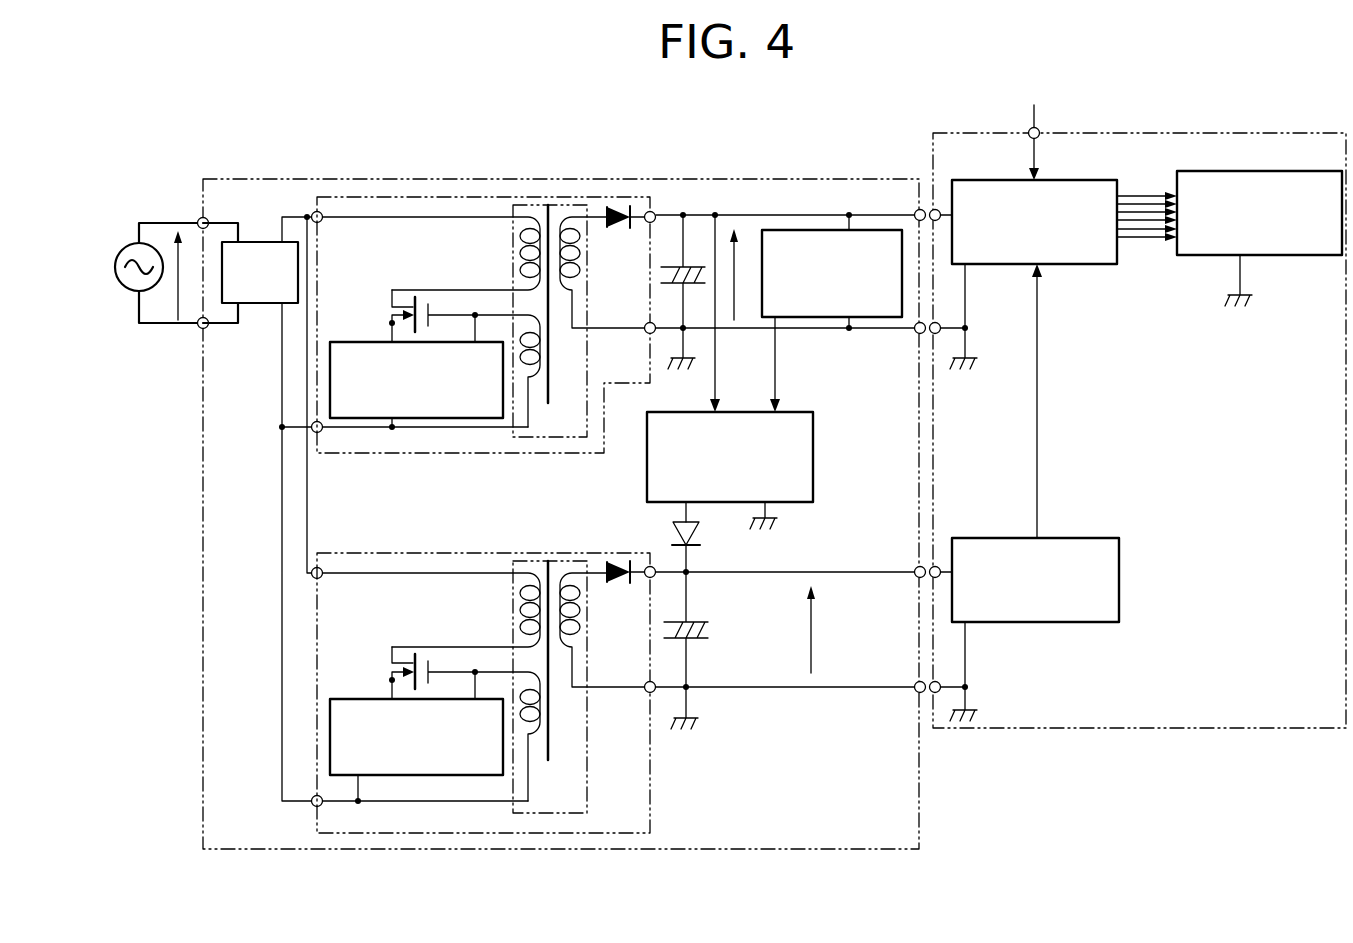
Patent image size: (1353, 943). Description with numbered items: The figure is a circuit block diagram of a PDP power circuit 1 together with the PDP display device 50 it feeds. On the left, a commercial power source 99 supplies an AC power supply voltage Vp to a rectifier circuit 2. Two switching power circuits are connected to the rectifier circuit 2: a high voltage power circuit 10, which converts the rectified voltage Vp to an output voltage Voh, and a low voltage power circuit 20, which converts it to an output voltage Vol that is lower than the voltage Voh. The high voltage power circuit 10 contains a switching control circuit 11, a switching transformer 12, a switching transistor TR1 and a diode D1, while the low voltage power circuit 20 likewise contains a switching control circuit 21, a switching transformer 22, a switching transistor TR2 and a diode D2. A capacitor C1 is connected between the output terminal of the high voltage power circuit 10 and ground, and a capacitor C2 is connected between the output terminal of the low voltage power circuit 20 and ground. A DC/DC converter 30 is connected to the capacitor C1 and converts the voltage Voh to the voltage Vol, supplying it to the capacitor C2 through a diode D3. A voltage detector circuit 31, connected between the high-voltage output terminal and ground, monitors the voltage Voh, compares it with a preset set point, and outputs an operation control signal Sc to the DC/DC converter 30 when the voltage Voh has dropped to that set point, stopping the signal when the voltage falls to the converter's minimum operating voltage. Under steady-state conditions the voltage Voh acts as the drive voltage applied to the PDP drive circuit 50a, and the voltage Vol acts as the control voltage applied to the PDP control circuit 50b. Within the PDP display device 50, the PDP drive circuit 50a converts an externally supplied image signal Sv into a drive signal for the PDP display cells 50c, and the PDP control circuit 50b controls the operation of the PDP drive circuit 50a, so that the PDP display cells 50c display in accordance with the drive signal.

The PDP power circuit 1 is at (919, 822).
The rectifier circuit 2 is at (259, 242).
The high voltage power circuit 10 is at (355, 195).
The switching control circuit 11 is at (367, 418).
The switching transformer 12 is at (520, 203).
The low voltage power circuit 20 is at (317, 822).
The switching control circuit 21 is at (330, 740).
The switching transformer 22 is at (588, 797).
The DC/DC converter 30 is at (815, 423).
The voltage detector circuit 31 is at (883, 232).
The PDP display device 50 is at (1102, 730).
The PDP drive circuit 50a is at (1073, 265).
The PDP control circuit 50b is at (1090, 537).
The PDP display cells 50c is at (1295, 257).
The commercial power source 99 is at (117, 290).
The switching transistor TR1 is at (392, 312).
The switching transistor TR2 is at (392, 668).
The diode D1 is at (620, 205).
The diode D2 is at (618, 585).
The diode D3 is at (672, 533).
The capacitor C1 is at (688, 268).
The capacitor C2 is at (695, 620).
The output voltage of the high voltage power circuit Voh is at (745, 265).
The output voltage of the low voltage power circuit Vol is at (833, 629).
The AC power supply voltage Vp is at (176, 292).
The operation control signal Sc is at (777, 365).
The image signal Sv is at (1053, 136).